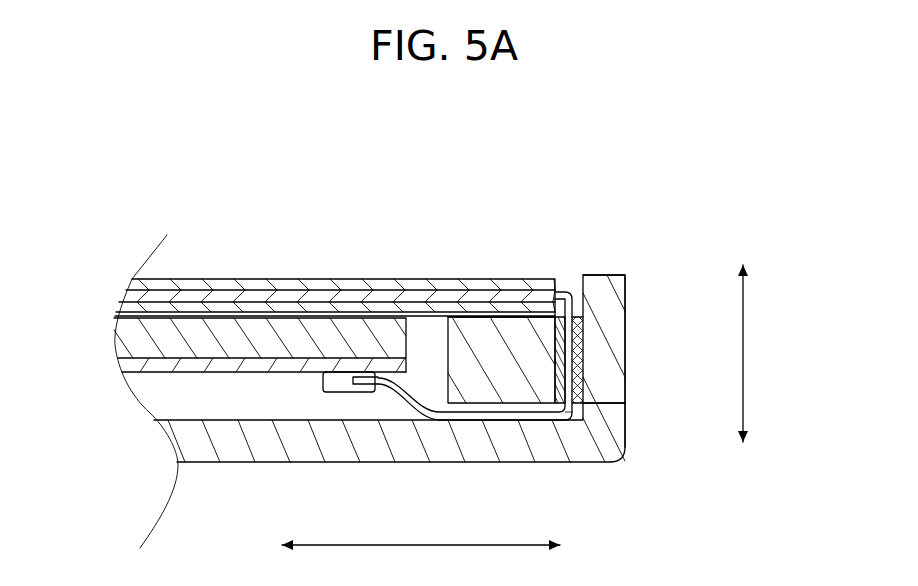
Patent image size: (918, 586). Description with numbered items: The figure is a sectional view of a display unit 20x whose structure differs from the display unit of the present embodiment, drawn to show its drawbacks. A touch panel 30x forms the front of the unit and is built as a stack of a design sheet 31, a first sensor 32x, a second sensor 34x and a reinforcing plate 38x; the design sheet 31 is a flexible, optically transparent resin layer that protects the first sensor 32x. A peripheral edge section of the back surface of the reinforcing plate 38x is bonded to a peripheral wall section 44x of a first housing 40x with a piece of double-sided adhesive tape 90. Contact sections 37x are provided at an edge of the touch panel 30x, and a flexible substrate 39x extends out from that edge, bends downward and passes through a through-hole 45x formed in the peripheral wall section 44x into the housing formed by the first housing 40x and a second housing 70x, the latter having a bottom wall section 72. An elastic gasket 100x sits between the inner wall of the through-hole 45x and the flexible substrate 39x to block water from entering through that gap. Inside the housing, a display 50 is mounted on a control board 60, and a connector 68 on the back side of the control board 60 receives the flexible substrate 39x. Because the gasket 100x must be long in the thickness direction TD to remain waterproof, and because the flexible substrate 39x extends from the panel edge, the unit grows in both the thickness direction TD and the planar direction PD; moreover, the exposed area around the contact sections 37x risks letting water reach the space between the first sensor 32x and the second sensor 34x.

The display unit 20x is at (489, 188).
The touch panel 30x is at (269, 274).
The design sheet 31 is at (410, 279).
The first sensor 32x is at (443, 292).
The second sensor 34x is at (472, 316).
The contact sections 37x is at (535, 280).
The reinforcing plate 38x is at (333, 290).
The flexible substrate 39x is at (566, 412).
The first housing 40x is at (630, 322).
The peripheral wall section 44x is at (473, 380).
The through-hole 45x is at (566, 347).
The gasket 100x is at (575, 364).
The display 50 is at (268, 349).
The control board 60 is at (222, 372).
The connector 68 is at (352, 393).
The second housing 70x is at (620, 466).
The bottom wall section 72 is at (302, 445).
The double-sided adhesive tape 90 is at (511, 322).
The thickness direction TD is at (741, 303).
The planar direction PD is at (355, 545).